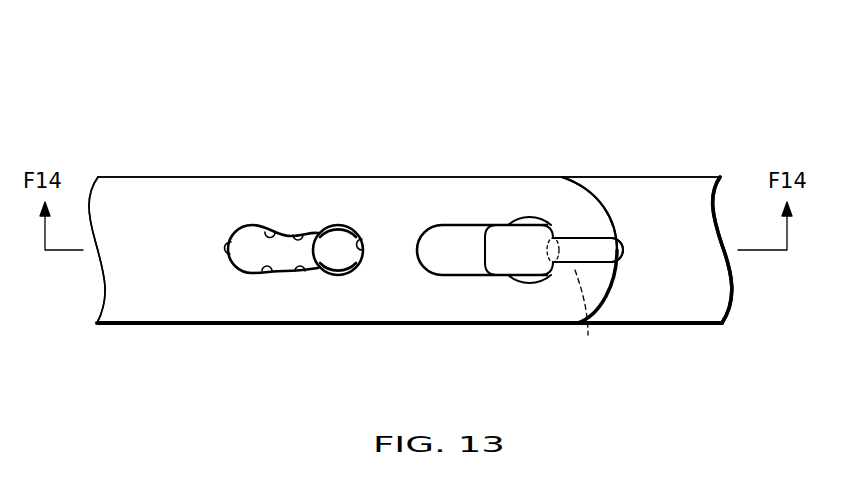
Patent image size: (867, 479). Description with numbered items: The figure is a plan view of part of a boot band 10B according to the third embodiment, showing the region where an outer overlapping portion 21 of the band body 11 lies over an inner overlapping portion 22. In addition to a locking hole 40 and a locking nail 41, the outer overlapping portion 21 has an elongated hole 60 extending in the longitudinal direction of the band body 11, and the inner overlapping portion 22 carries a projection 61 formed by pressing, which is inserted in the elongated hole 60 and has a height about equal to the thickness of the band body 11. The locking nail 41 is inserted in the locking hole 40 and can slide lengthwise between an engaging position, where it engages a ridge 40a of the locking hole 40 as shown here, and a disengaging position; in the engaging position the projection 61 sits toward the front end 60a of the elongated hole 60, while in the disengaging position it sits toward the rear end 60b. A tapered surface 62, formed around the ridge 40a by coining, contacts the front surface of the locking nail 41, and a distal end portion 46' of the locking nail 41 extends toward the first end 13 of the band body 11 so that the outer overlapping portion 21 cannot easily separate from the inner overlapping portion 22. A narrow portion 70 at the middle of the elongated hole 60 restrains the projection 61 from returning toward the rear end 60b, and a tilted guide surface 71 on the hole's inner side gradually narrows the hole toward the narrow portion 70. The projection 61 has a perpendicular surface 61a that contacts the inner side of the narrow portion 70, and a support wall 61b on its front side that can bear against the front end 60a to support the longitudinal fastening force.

The boot band 10B is at (668, 80).
The band body 11 is at (700, 177).
The first end 13 is at (615, 223).
The outer overlapping portion 21 is at (145, 308).
The inner overlapping portion 22 is at (668, 308).
The locking hole 40 is at (465, 240).
The ridge 40a is at (590, 333).
The locking nail 41 is at (528, 217).
The distal end portion 46' is at (606, 224).
The elongated hole 60 is at (250, 260).
The front end 60a is at (363, 237).
The rear end 60b is at (232, 244).
The projection 61 is at (345, 225).
The perpendicular surface 61a is at (335, 225).
The support wall 61b is at (360, 270).
The tapered surface 62 is at (530, 283).
The narrow portion 70 is at (310, 231).
The tilted guide surface 71 is at (268, 228).